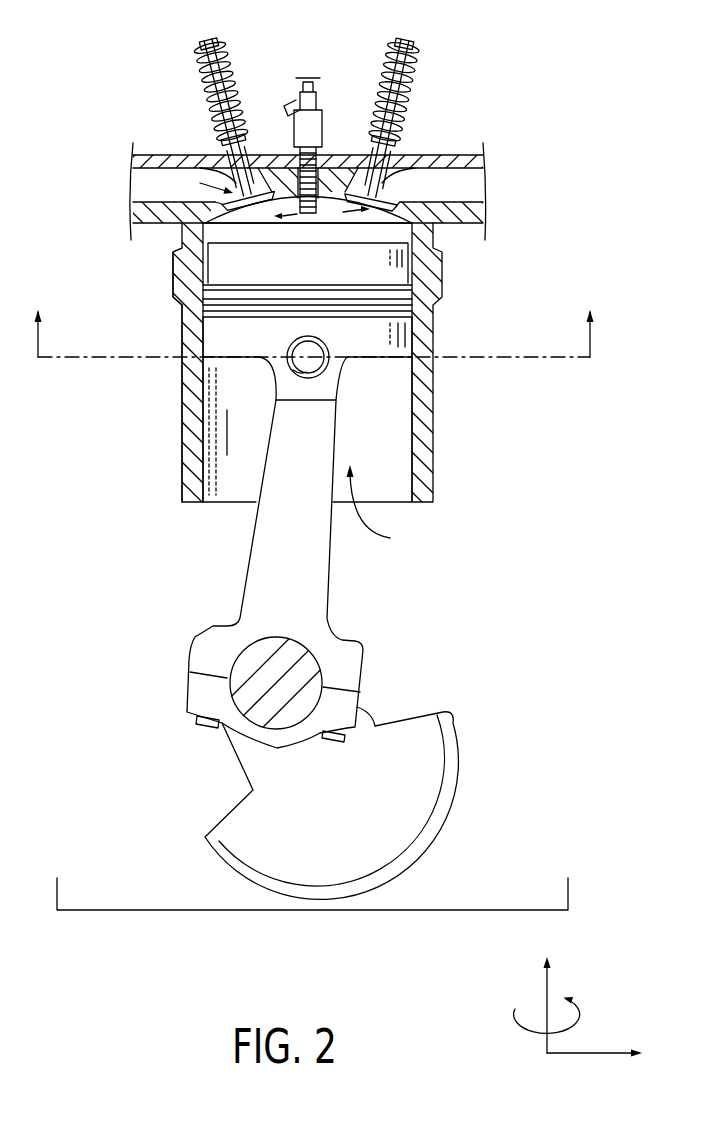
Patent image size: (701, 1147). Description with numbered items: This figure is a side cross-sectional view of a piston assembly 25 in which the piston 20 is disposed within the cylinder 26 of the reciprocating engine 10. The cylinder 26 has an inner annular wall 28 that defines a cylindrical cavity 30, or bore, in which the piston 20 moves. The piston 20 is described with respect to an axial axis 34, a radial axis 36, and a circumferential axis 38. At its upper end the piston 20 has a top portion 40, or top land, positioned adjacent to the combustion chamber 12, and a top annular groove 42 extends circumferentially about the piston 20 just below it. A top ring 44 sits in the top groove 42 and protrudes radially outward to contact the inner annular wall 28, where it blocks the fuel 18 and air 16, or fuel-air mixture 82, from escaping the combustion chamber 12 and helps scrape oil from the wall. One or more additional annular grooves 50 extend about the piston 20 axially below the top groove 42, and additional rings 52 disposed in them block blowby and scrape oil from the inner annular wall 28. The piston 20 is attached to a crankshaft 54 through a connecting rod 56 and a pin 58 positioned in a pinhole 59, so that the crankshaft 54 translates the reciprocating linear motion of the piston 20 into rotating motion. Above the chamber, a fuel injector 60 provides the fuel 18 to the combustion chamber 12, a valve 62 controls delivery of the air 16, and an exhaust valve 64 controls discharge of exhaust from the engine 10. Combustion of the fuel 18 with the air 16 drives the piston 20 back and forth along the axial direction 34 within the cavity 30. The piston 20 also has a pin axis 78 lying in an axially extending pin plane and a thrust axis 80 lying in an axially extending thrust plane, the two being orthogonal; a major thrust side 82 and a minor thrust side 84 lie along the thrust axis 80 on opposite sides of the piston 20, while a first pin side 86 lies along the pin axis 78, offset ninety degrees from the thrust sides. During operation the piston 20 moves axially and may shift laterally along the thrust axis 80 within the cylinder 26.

The engine 10 is at (580, 70).
The combustion chamber 12 is at (383, 203).
The oxidant 16 is at (228, 175).
The fuel 18 is at (308, 68).
The piston 20 is at (436, 378).
The piston assembly 25 is at (383, 510).
The cylinder 26 is at (185, 395).
The inner annular wall 28 is at (213, 433).
The cylindrical cavity 30 is at (251, 494).
The axial axis 34 is at (547, 988).
The radial axis 36 is at (587, 1054).
The circumferential axis 38 is at (580, 1023).
The top portion 40 is at (380, 271).
The top annular groove 42 is at (178, 270).
The top ring 44 is at (270, 284).
The additional annular grooves 50 is at (416, 306).
The additional rings 52 is at (353, 313).
The crankshaft 54 is at (247, 827).
The connecting rod 56 is at (313, 602).
The pin 58 is at (312, 366).
The pinhole 59 is at (297, 374).
The fuel injector 60 is at (316, 96).
The valve 62 is at (207, 40).
The exhaust valve 64 is at (411, 40).
The pin axis 78 is at (309, 355).
The thrust axis 80 is at (114, 360).
The major thrust side 82 is at (296, 212).
The minor thrust side 84 is at (414, 333).
The first pin side 86 is at (327, 332).